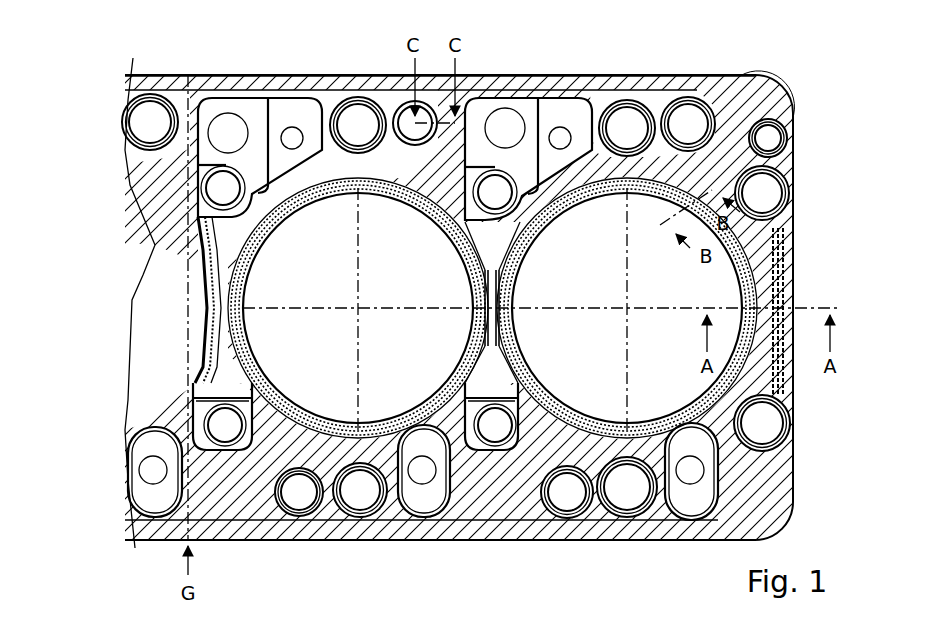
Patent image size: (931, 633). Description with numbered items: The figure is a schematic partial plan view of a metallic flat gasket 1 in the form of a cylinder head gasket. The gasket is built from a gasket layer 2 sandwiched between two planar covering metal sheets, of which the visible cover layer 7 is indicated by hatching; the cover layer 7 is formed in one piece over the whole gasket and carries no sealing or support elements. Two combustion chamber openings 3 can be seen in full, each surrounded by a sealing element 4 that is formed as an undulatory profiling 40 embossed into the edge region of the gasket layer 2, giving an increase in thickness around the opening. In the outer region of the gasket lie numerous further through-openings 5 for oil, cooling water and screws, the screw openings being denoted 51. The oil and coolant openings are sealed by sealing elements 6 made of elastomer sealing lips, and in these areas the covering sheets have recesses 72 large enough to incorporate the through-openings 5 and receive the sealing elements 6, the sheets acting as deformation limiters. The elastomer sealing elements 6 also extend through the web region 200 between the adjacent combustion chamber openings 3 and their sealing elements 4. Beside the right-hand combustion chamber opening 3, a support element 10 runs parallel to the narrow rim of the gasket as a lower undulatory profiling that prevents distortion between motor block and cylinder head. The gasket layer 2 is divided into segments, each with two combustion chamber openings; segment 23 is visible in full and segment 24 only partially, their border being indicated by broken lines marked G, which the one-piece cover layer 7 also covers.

The metallic flat gasket 1 is at (250, 50).
The gasket layer 2 is at (423, 342).
The combustion chamber openings 3 is at (540, 309).
The sealing element 4 is at (284, 224).
The further through-openings 5 is at (409, 115).
The sealing elements 6 is at (270, 133).
The cover layer 7 is at (758, 99).
The support element 10 is at (784, 283).
The segment 23 is at (212, 74).
The segment 24 is at (153, 92).
The undulatory profiling 40 is at (472, 328).
The screw openings 51 is at (358, 122).
The recesses 72 is at (611, 104).
The web region 200 is at (206, 319).